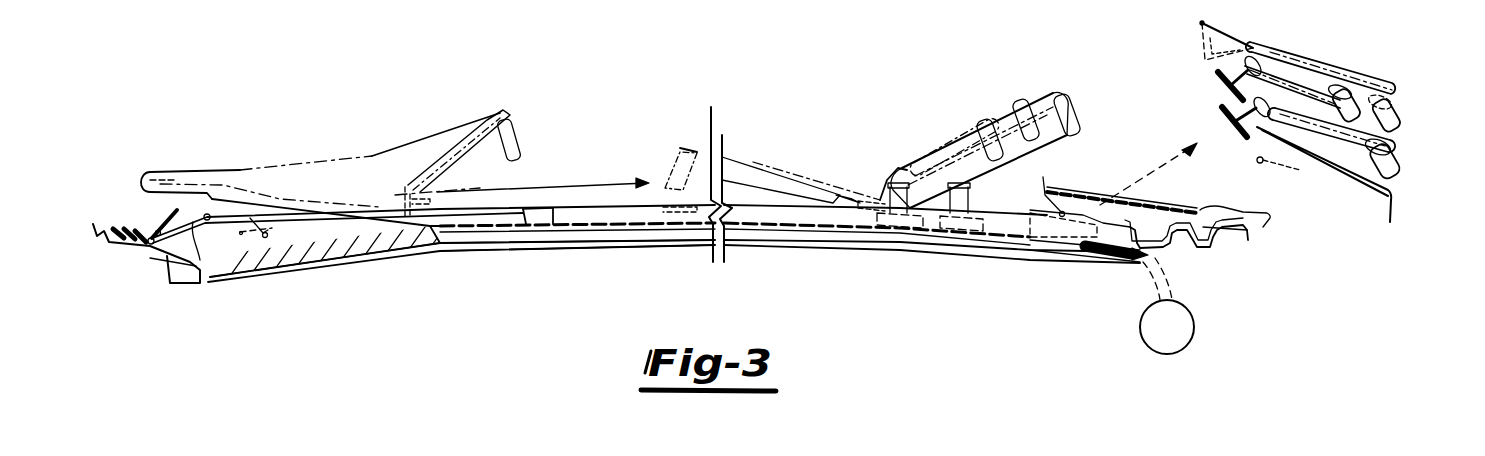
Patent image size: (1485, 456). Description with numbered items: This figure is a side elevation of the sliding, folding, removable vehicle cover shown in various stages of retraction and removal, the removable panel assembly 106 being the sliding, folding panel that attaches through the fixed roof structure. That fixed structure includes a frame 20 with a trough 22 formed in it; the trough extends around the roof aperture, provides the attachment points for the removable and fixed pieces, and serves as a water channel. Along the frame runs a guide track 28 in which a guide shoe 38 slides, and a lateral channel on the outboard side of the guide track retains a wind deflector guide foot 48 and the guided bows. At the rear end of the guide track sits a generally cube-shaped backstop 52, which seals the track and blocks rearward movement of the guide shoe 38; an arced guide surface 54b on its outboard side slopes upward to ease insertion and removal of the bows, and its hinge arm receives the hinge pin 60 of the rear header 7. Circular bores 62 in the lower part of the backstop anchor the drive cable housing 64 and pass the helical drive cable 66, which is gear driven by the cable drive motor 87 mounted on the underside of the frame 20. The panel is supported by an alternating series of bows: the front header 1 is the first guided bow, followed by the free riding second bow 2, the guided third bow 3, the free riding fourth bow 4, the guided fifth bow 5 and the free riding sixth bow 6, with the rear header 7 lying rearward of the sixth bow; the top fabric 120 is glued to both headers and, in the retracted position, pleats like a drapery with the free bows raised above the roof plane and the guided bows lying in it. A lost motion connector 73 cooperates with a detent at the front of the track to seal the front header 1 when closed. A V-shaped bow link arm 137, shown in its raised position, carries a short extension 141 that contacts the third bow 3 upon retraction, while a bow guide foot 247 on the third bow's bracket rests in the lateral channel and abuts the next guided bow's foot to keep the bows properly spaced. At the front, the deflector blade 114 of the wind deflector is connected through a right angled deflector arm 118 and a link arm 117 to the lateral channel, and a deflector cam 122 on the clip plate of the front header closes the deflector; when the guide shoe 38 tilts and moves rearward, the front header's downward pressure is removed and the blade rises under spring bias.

The front header 1 is at (748, 178).
The second bow 2 is at (507, 113).
The third bow 3 is at (682, 178).
The fourth bow 4 is at (1022, 105).
The fifth bow 5 is at (960, 173).
The sixth bow 6 is at (1072, 118).
The rear header 7 is at (1270, 213).
The frame 20 is at (132, 252).
The trough 22 is at (1175, 251).
The guide track 28 is at (600, 234).
The guide shoe 38 is at (282, 237).
The wind deflector guide foot 48 is at (540, 224).
The backstop 52 is at (1030, 237).
The guide surface 54b is at (1040, 230).
The hinge pin 60 is at (1064, 210).
The circular bores 62 is at (1082, 232).
The drive cable housing 64 is at (1118, 258).
The drive cable 66 is at (643, 231).
The lost motion connector 73 is at (256, 234).
The cable drive motor 87 is at (1190, 318).
The removable panel assembly 106 is at (1347, 51).
The deflector blade 114 is at (153, 228).
The link arm 117 is at (330, 222).
The deflector arm 118 is at (192, 283).
The top fabric 120 is at (388, 152).
The deflector cam 122 is at (280, 202).
The bow link arm 137 is at (473, 153).
The short extension 141 is at (437, 192).
The bow guide foot 247 is at (888, 235).